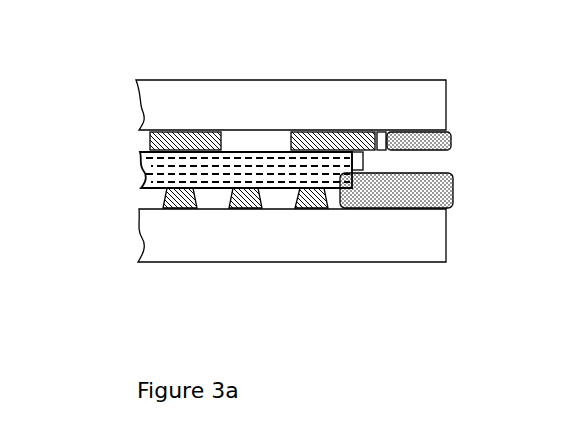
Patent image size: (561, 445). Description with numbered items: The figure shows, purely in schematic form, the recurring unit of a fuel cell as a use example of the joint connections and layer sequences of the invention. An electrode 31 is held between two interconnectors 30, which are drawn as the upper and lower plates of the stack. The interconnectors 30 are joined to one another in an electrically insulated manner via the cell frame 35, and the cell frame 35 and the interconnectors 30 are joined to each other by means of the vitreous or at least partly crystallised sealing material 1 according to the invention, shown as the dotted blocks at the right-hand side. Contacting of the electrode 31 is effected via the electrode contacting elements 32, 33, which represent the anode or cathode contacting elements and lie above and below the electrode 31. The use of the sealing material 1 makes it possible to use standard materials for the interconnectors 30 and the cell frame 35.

The sealing material 1 is at (450, 132).
The interconnector 30 is at (263, 87).
The electrode 31 is at (139, 168).
The electrode contacting element 32 is at (320, 137).
The electrode contacting element 33 is at (310, 208).
The cell frame 35 is at (440, 164).